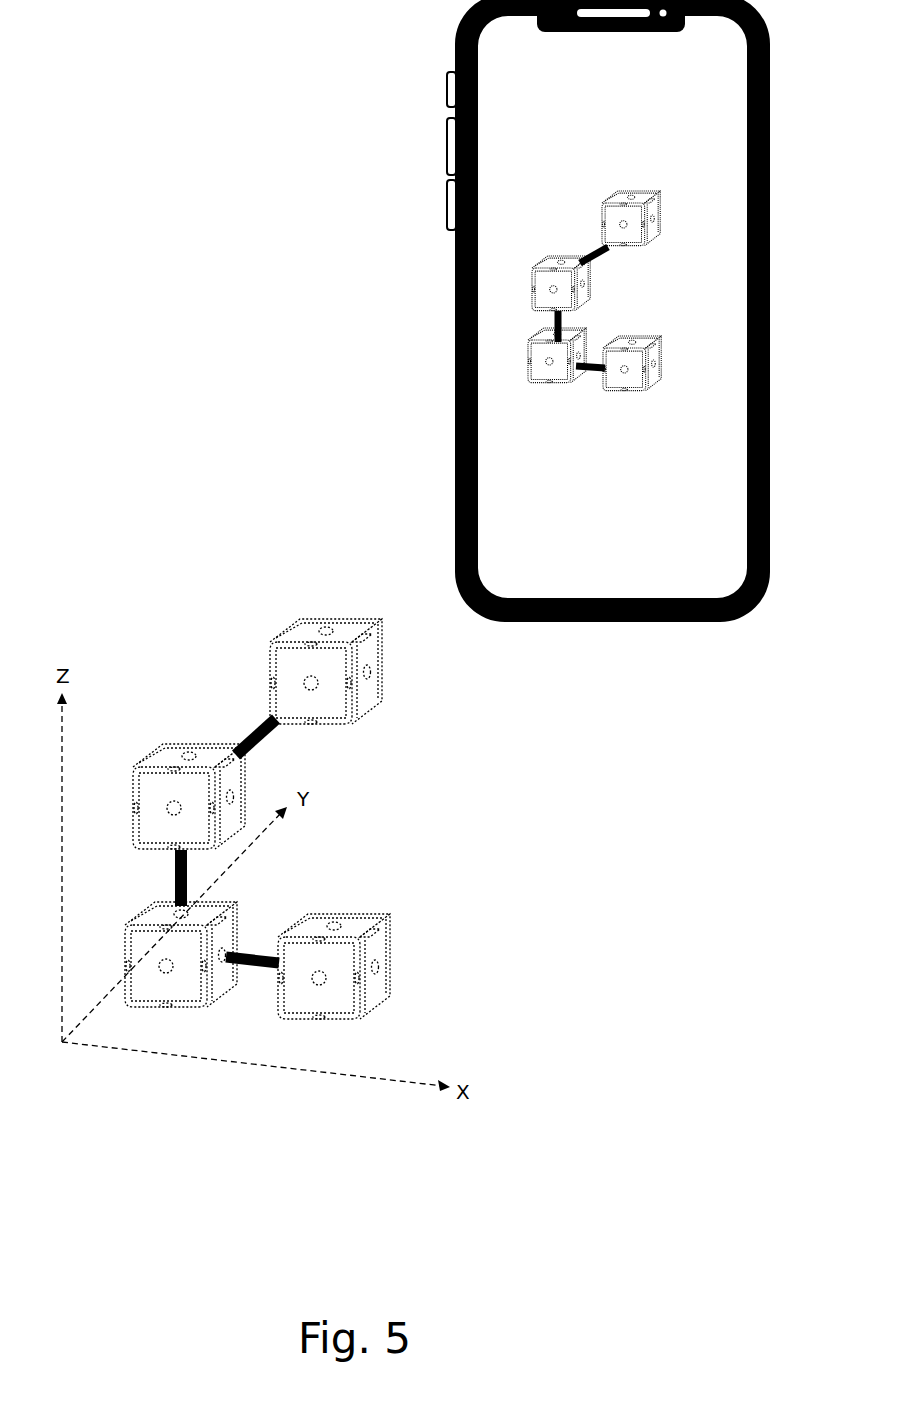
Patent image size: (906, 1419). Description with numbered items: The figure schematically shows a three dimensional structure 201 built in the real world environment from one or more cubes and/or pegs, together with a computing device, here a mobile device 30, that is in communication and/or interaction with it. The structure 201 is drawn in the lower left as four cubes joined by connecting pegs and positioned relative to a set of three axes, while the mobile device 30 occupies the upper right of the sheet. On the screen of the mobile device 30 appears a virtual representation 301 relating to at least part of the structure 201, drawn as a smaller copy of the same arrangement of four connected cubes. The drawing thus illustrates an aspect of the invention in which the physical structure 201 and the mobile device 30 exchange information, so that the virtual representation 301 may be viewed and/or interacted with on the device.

The mobile device 30 is at (358, 138).
The virtual representation 301 is at (558, 182).
The structure 201 is at (169, 555).